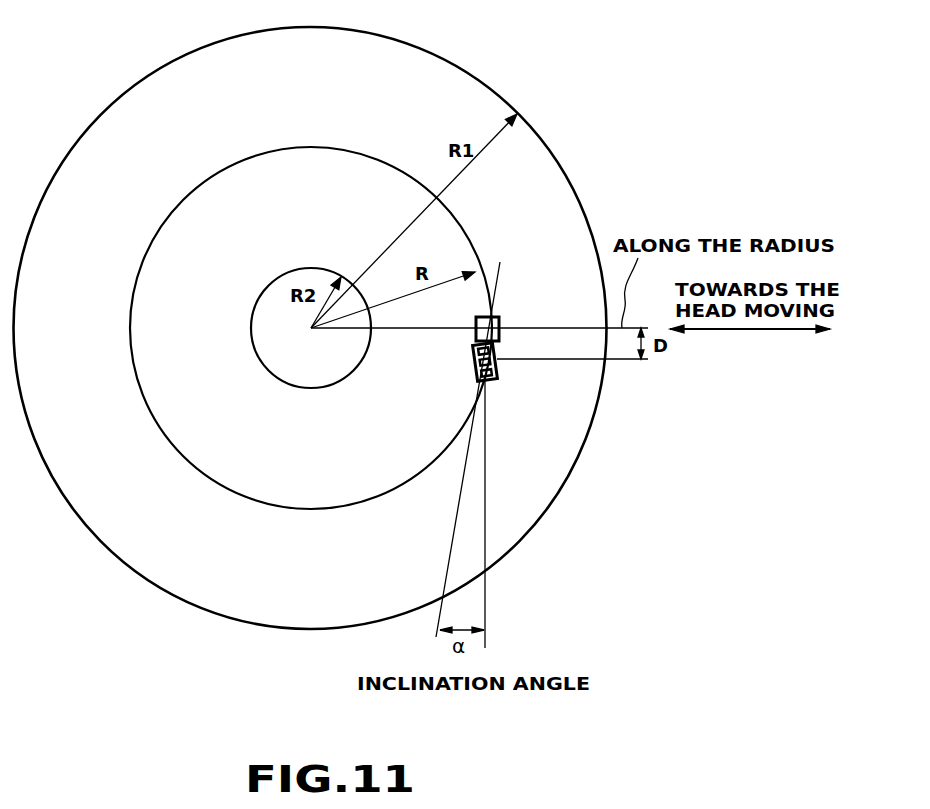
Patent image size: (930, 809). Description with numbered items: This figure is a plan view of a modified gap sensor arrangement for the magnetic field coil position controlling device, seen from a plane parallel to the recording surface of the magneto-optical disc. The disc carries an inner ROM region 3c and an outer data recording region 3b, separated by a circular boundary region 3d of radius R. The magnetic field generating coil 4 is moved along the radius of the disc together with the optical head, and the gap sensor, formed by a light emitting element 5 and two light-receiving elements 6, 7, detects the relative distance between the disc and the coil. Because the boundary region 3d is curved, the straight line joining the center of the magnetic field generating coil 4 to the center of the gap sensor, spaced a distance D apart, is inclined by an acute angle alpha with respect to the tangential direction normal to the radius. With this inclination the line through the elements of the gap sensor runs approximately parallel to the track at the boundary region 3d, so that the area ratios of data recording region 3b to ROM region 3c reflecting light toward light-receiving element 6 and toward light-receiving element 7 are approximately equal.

The data recording region 3b is at (447, 78).
The ROM region 3c is at (432, 233).
The boundary region 3d is at (308, 510).
The magnetic field generating coil 4 is at (498, 316).
The light emitting element 5 is at (495, 363).
The light-receiving element 6 is at (493, 353).
The light-receiving element 7 is at (490, 378).